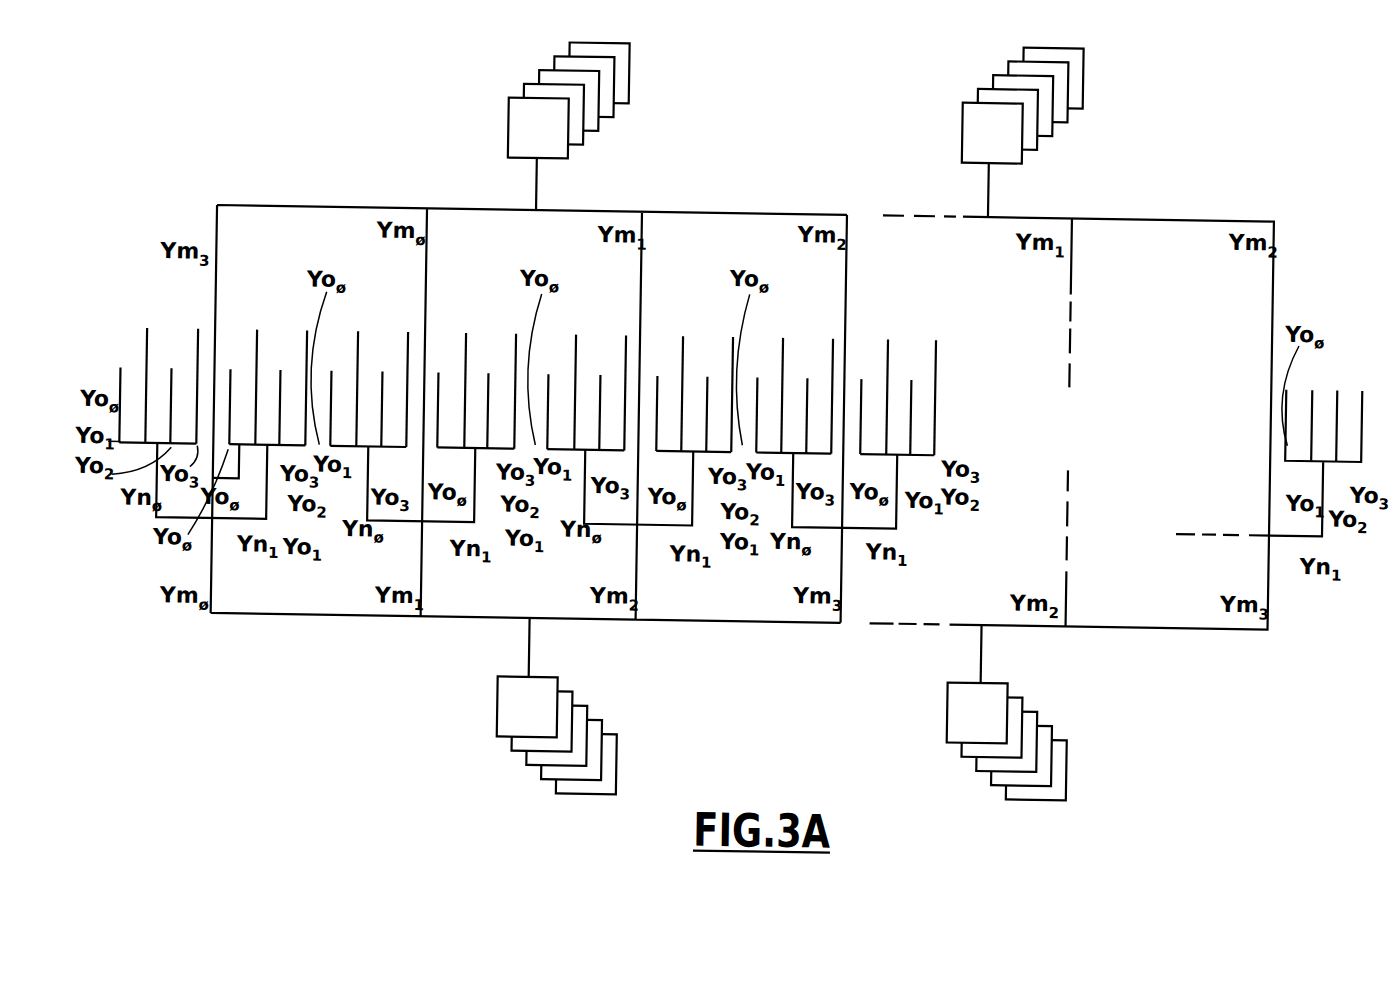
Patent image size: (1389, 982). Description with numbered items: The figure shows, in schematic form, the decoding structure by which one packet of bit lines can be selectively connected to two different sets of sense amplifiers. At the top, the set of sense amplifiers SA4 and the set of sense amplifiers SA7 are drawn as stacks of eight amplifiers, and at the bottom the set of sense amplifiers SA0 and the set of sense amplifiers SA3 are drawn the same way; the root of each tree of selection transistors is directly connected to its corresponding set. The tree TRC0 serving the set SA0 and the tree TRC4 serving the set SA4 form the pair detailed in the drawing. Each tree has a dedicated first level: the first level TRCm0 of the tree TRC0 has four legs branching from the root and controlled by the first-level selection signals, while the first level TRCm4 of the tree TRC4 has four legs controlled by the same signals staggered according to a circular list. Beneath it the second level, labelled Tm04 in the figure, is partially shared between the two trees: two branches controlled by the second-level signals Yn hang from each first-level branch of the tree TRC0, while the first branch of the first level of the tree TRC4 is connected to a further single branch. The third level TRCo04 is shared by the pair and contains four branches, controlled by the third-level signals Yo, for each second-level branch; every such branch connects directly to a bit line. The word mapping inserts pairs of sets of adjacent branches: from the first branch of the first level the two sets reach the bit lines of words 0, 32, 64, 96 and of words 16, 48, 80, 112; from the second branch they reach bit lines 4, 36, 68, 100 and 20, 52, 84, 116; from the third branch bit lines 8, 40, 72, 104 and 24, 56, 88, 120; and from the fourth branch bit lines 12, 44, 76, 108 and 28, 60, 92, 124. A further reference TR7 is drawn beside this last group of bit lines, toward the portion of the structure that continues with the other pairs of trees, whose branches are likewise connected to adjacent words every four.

The bit line 0 is at (120, 390).
The bit line 4 is at (331, 394).
The bit line 8 is at (548, 397).
The bit line 12 is at (757, 400).
The bit line 16 is at (230, 392).
The bit line 20 is at (438, 395).
The bit line 24 is at (657, 399).
The bit line 28 is at (861, 402).
The bit line 32 is at (146, 371).
The bit line 36 is at (357, 374).
The bit line 40 is at (575, 377).
The bit line 44 is at (782, 381).
The bit line 48 is at (256, 372).
The bit line 52 is at (465, 376).
The bit line 56 is at (682, 379).
The bit line 60 is at (887, 382).
The bit line 64 is at (171, 391).
The bit line 68 is at (382, 394).
The bit line 72 is at (600, 398).
The bit line 76 is at (807, 401).
The bit line 80 is at (280, 393).
The bit line 84 is at (488, 396).
The bit line 88 is at (707, 399).
The bit line 92 is at (911, 403).
The bit line 96 is at (197, 371).
The bit line 100 is at (407, 375).
The bit line 104 is at (625, 378).
The bit line 108 is at (832, 381).
The bit line 112 is at (306, 373).
The bit line 116 is at (515, 376).
The bit line 120 is at (732, 380).
The bit line 124 is at (935, 383).
The set of sense amplifiers SA0 is at (502, 692).
The set of sense amplifiers SA3 is at (952, 703).
The set of sense amplifiers SA4 is at (504, 128).
The set of sense amplifiers SA7 is at (958, 116).
The tree structure of selection transistors TRC0 is at (611, 644).
The tree structure of selection transistors TRC4 is at (406, 137).
The first dedicated level TRCm4 is at (150, 285).
The first dedicated level TRCm0 is at (184, 561).
The third level TRCo04 is at (106, 354).
The terminal m04 Tm04 is at (118, 499).
The transistor row 7 TR7 is at (1001, 452).